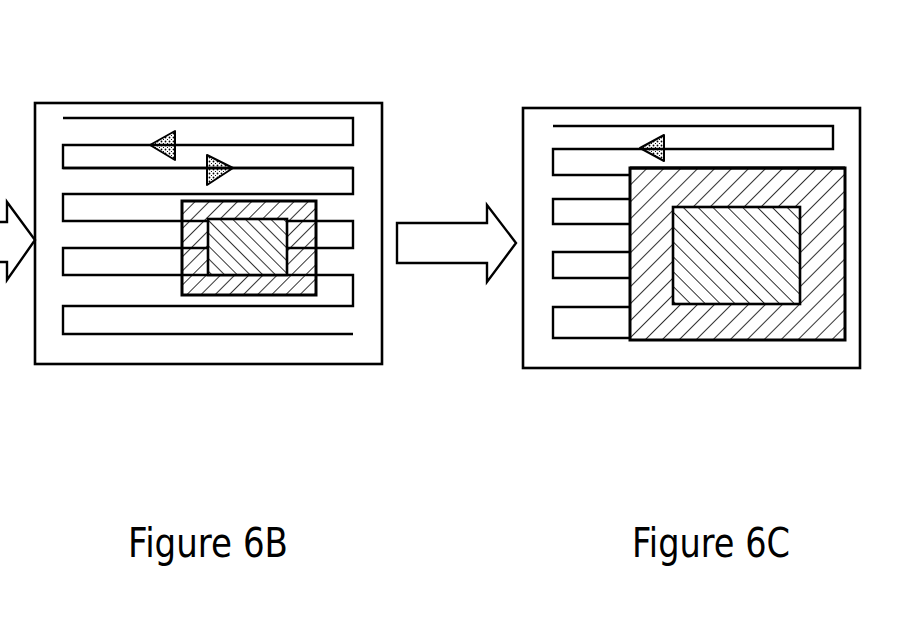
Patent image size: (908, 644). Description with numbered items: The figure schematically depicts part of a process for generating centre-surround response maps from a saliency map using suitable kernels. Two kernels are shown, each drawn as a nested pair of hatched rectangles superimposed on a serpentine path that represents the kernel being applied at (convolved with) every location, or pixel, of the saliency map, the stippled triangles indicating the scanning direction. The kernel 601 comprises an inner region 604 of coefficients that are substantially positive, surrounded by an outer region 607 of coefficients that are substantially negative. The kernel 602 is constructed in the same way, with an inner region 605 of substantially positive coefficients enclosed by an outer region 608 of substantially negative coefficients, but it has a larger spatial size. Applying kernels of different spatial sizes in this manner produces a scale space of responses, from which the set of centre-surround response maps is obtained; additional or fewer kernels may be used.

In FIG. 6B, the kernel 601 is at (315, 182).
In FIG. 6B, the inner region 604 is at (262, 258).
In FIG. 6B, the outer region 607 is at (185, 285).
In FIG. 6C, the kernel 602 is at (725, 162).
In FIG. 6C, the inner region 605 is at (768, 286).
In FIG. 6C, the outer region 608 is at (636, 332).